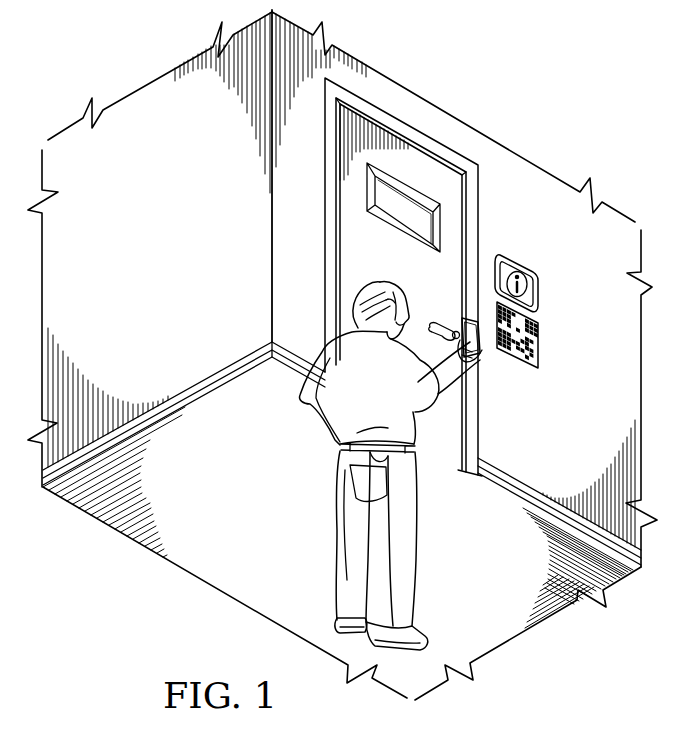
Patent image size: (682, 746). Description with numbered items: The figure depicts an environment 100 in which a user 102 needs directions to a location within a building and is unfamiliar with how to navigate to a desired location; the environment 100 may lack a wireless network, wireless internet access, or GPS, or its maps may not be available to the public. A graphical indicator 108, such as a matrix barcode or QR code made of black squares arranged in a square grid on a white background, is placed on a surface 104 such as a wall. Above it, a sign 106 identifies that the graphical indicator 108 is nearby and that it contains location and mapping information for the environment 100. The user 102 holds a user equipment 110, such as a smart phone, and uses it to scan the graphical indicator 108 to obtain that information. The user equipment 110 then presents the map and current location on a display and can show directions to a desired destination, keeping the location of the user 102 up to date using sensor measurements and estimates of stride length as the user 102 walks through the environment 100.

The environment 100 is at (93, 69).
The user 102 is at (314, 411).
The surface 104 is at (540, 190).
The sign 106 is at (540, 291).
The graphical indicator 108 is at (540, 348).
The user equipment 110 is at (481, 347).